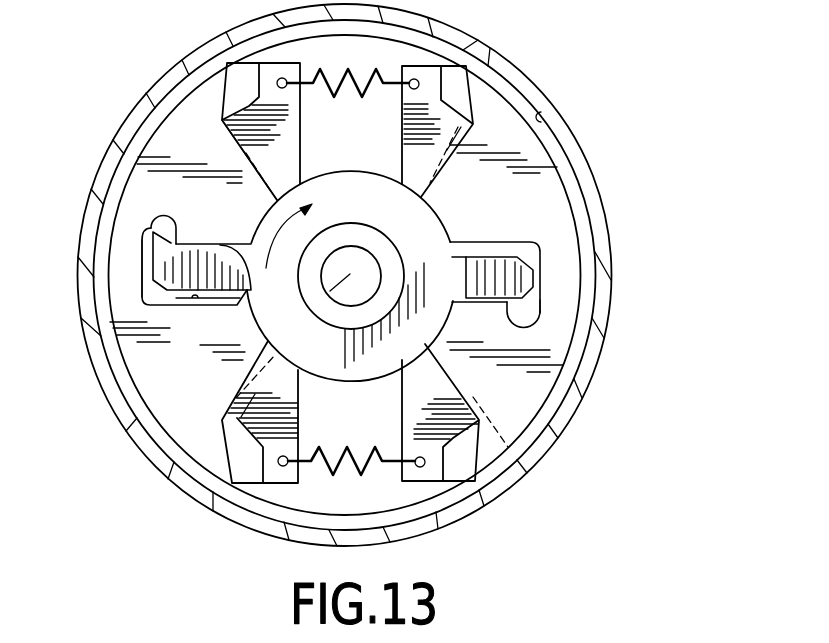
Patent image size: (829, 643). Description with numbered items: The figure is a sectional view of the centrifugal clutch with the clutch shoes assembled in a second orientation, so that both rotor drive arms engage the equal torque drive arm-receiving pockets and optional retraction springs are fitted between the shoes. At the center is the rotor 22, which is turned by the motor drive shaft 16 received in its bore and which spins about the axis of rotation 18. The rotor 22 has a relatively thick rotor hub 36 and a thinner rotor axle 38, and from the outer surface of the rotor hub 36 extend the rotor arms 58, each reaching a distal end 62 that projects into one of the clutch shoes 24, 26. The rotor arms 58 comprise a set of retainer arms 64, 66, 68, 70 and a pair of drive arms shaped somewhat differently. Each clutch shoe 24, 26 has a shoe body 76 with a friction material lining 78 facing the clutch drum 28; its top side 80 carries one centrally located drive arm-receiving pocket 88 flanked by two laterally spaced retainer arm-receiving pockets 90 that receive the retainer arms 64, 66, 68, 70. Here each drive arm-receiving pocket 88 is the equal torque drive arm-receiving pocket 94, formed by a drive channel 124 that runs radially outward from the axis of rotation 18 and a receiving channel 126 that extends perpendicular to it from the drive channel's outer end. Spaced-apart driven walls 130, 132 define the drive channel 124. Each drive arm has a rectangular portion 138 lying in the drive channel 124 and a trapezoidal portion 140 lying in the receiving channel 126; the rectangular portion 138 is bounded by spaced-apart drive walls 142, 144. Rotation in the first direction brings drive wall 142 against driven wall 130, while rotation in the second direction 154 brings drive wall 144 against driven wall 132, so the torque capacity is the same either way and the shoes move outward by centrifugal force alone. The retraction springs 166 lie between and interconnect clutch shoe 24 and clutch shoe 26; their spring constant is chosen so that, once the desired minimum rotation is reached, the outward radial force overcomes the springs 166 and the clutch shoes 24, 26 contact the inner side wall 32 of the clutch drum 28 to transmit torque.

The motor drive shaft 16 is at (349, 248).
The axis of rotation 18 is at (330, 291).
The rotor 22 is at (346, 165).
The clutch shoe 24 is at (550, 193).
The clutch shoe 26 is at (140, 200).
The clutch drum 28 is at (478, 45).
The inner side wall 32 is at (542, 116).
The rotor hub 36 is at (340, 365).
The rotor axle 38 is at (388, 255).
The rotor arm 58 is at (156, 265).
The distal end 62 is at (542, 287).
The retainer arm 64 is at (305, 131).
The retainer arm 66 is at (305, 412).
The retainer arm 68 is at (523, 473).
The retainer arm 70 is at (336, 240).
The shoe body 76 is at (130, 352).
The friction material lining 78 is at (200, 476).
The top side 80 is at (167, 83).
The drive arm-receiving pocket 88 is at (150, 293).
The retainer arm-receiving pocket 90 is at (257, 105).
The equal torque drive arm-receiving pocket 94 is at (176, 205).
The drive channel 124 is at (215, 308).
The receiving channel 126 is at (147, 231).
The driven wall 130 is at (185, 307).
The driven wall 132 is at (343, 270).
The rectangular portion 138 is at (517, 302).
The trapezoidal portion 140 is at (587, 317).
The drive wall 142 is at (160, 307).
The drive wall 144 is at (177, 236).
The second direction 154 is at (252, 204).
The retraction spring 166 is at (367, 66).